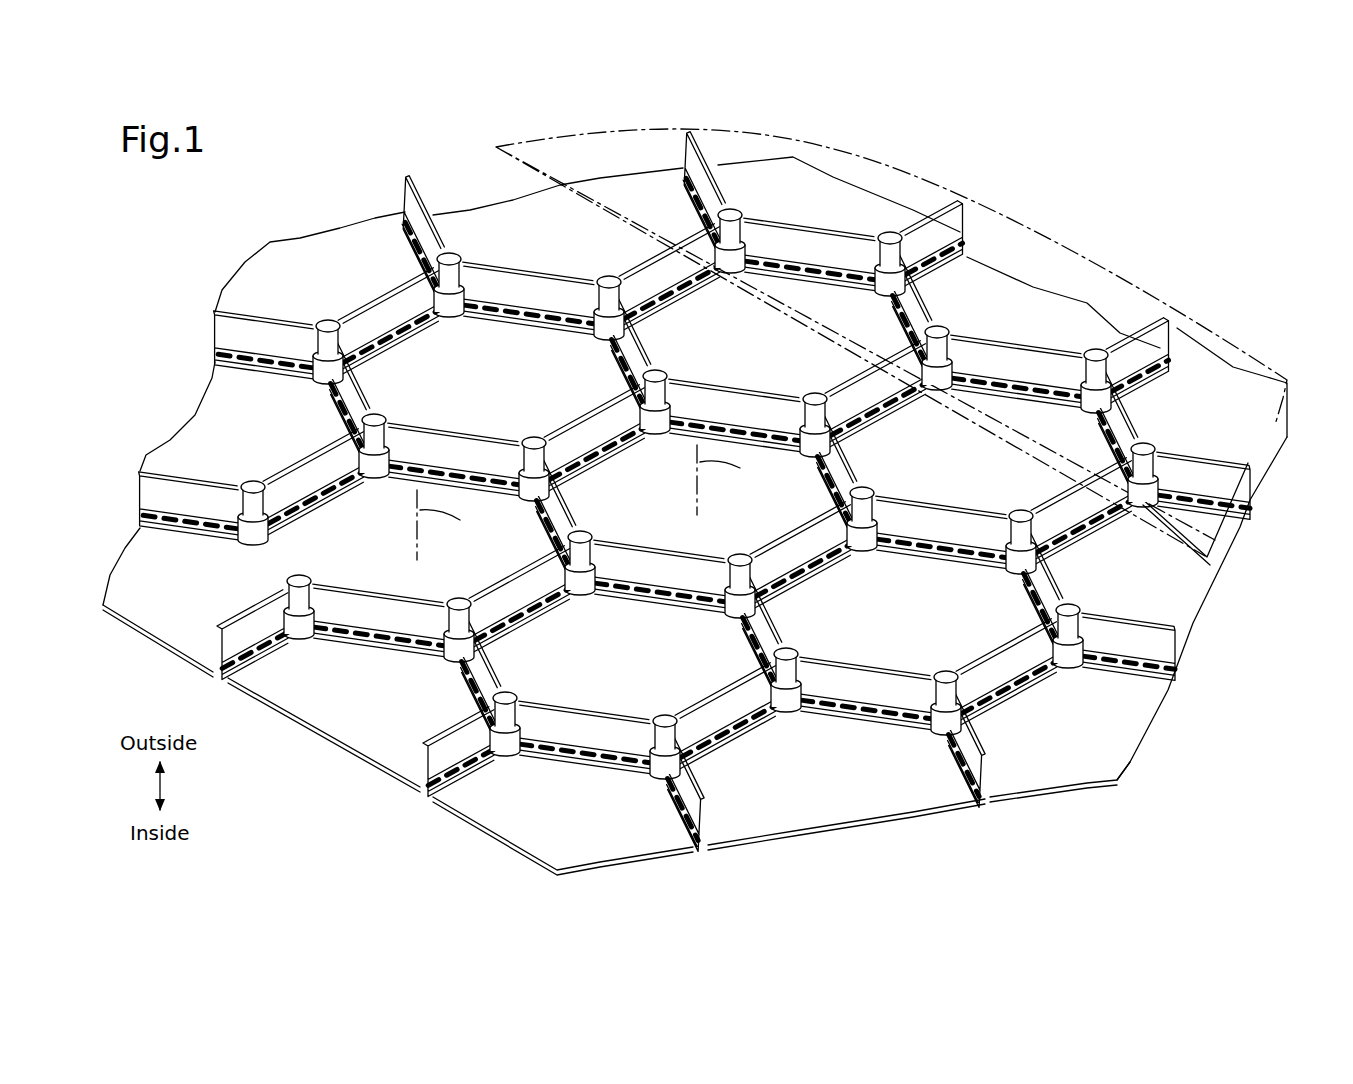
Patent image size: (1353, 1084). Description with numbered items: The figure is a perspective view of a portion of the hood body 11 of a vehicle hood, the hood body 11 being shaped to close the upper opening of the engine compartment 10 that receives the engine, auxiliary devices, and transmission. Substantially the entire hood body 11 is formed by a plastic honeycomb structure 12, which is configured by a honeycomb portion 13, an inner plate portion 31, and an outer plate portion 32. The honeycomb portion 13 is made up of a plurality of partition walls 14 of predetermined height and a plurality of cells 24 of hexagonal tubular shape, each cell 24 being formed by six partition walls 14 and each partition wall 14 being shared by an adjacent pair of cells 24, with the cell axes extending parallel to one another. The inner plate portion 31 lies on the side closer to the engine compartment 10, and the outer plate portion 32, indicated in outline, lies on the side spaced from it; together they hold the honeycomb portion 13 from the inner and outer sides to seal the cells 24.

The engine compartment 10 is at (704, 502).
The hood body 11 is at (312, 213).
The honeycomb structure 12 is at (1211, 608).
The honeycomb portion 13 is at (1178, 703).
The partition wall 14 is at (690, 445).
The cell 24 is at (505, 385).
The inner plate portion 31 is at (1128, 752).
The outer plate portion 32 is at (1010, 210).